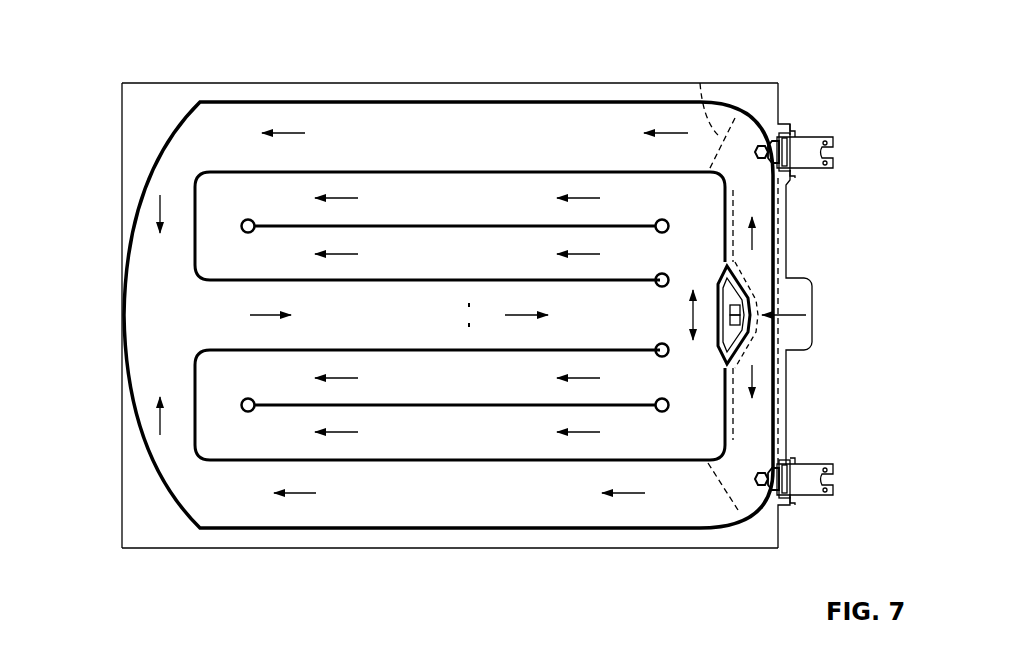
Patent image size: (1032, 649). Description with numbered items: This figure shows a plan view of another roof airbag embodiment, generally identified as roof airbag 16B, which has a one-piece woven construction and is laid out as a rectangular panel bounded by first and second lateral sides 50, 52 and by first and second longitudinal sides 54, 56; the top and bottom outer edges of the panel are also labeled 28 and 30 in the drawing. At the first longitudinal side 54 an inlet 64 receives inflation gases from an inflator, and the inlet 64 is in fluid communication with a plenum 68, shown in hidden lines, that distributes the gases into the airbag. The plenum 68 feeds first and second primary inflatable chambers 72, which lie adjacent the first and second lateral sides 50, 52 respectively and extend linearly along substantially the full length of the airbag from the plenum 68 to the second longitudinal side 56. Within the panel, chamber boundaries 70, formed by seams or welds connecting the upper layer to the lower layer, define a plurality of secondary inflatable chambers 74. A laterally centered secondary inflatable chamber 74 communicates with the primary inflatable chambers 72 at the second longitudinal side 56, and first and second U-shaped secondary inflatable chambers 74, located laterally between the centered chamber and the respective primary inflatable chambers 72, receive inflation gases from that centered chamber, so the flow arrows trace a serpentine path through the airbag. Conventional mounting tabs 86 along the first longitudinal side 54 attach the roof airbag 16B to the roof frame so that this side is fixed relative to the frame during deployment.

The roof airbag 16B is at (550, 81).
The top edge of plate 28 is at (357, 88).
The bottom edge of plate 30 is at (392, 540).
The first lateral side 50 is at (626, 83).
The second lateral side 52 is at (533, 538).
The first longitudinal side 54 is at (787, 222).
The second longitudinal side 56 is at (121, 248).
The inlet 64 is at (797, 278).
The plenum 68 is at (701, 83).
The chamber boundaries 70 is at (322, 172).
The primary inflatable chambers 72 is at (480, 148).
The secondary inflatable chambers 74 is at (480, 211).
The mounting tabs 86 is at (800, 138).